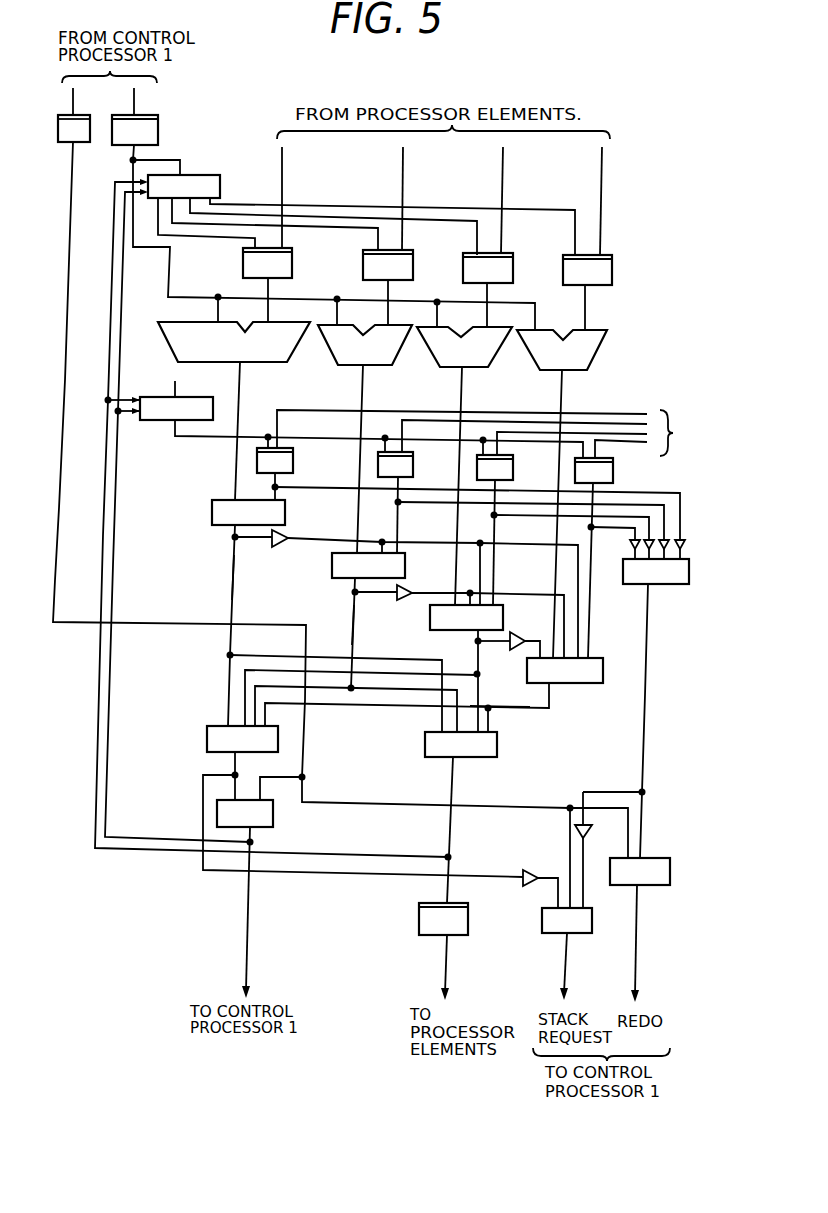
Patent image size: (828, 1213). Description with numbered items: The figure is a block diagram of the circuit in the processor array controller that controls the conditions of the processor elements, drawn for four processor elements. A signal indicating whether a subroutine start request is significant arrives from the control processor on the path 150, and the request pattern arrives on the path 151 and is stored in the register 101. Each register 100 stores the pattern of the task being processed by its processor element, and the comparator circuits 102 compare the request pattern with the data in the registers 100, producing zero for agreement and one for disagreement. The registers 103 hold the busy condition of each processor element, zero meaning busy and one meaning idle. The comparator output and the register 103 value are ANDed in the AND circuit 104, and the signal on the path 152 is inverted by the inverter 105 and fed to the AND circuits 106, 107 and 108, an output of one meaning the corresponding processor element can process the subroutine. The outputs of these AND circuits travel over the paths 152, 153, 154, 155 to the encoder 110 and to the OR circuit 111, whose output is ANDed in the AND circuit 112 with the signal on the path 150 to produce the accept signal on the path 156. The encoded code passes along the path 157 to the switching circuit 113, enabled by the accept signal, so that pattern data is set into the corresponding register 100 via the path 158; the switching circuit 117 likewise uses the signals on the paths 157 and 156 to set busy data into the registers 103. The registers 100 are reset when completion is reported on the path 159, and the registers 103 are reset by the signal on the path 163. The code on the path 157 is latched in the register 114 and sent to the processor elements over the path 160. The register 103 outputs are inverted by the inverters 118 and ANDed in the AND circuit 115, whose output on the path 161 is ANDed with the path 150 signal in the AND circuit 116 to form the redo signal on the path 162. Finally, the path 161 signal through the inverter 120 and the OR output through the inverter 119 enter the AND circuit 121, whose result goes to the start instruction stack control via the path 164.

The register 100 is at (292, 258).
The register 101 is at (158, 128).
The comparator circuit 102 is at (270, 362).
The register 103 is at (293, 460).
The AND circuit 104 is at (220, 500).
The inverter 105 is at (287, 533).
The AND circuit 106 is at (332, 561).
The AND circuit 107 is at (430, 619).
The AND circuit 108 is at (598, 657).
The encoder 110 is at (497, 741).
The OR circuit 111 is at (207, 727).
The AND circuit 112 is at (273, 823).
The switching circuit 113 is at (217, 175).
The register 114 is at (419, 910).
The AND circuit 115 is at (680, 584).
The AND circuit 116 is at (653, 858).
The switching circuit 117 is at (211, 397).
The inverter 118 is at (630, 545).
The inverter 119 is at (531, 869).
The inverter 120 is at (574, 830).
The AND circuit 121 is at (542, 914).
The path 150 is at (75, 99).
The path 151 is at (136, 99).
The path 152 is at (231, 567).
The path 153 is at (351, 620).
The path 154 is at (476, 658).
The path 155 is at (496, 708).
The path 156 is at (115, 563).
The path 157 is at (105, 533).
The path 158 is at (240, 242).
The path 159 is at (284, 177).
The path 160 is at (447, 970).
The path 161 is at (648, 695).
The path 162 is at (639, 941).
The path 163 is at (608, 413).
The path 164 is at (565, 971).